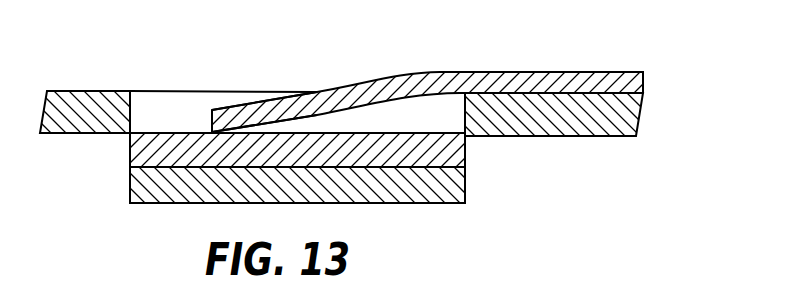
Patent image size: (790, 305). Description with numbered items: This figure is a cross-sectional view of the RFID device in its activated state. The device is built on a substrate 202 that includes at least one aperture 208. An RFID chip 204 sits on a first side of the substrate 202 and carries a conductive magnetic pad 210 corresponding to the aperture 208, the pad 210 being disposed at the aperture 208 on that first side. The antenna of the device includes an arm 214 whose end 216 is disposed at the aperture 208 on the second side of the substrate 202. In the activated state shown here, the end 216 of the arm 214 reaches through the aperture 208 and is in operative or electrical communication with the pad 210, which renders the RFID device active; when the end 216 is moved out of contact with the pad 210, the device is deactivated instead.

The substrate 202 is at (615, 122).
The RFID chip 204 is at (467, 193).
The aperture 208 is at (167, 107).
The conductive magnetic pad 210 is at (467, 147).
The arm 214 is at (573, 72).
The end 216 is at (257, 110).